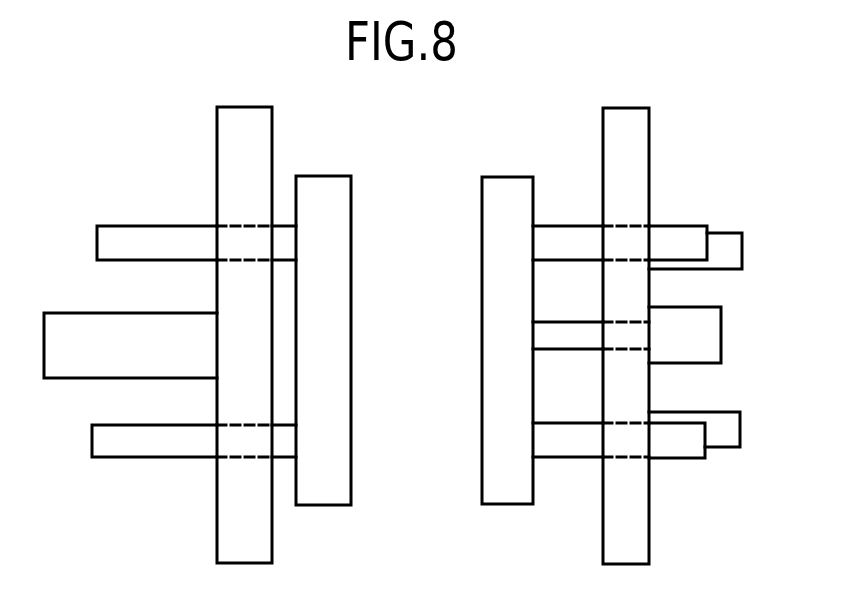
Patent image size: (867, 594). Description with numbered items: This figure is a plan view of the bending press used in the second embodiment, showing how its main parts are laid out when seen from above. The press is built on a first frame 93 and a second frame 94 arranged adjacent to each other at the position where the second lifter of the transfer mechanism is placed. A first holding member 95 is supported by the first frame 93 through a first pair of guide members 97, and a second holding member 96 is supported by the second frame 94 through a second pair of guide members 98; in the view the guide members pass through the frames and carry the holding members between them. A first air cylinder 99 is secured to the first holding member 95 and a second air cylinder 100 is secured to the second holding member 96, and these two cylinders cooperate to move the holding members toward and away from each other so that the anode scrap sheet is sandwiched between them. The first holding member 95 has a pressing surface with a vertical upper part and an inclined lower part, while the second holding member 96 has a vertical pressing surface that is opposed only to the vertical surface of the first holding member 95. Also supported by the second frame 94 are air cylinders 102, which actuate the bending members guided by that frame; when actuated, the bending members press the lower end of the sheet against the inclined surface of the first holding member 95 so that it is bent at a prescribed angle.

The first frame 93 is at (232, 140).
The second frame 94 is at (636, 132).
The first holding member 95 is at (341, 270).
The second holding member 96 is at (490, 200).
The first pair of guide members 97 is at (143, 236).
The second pair of guide members 98 is at (684, 236).
The first air cylinder 99 is at (88, 322).
The second air cylinder 100 is at (711, 323).
The air cylinders 102 is at (728, 243).